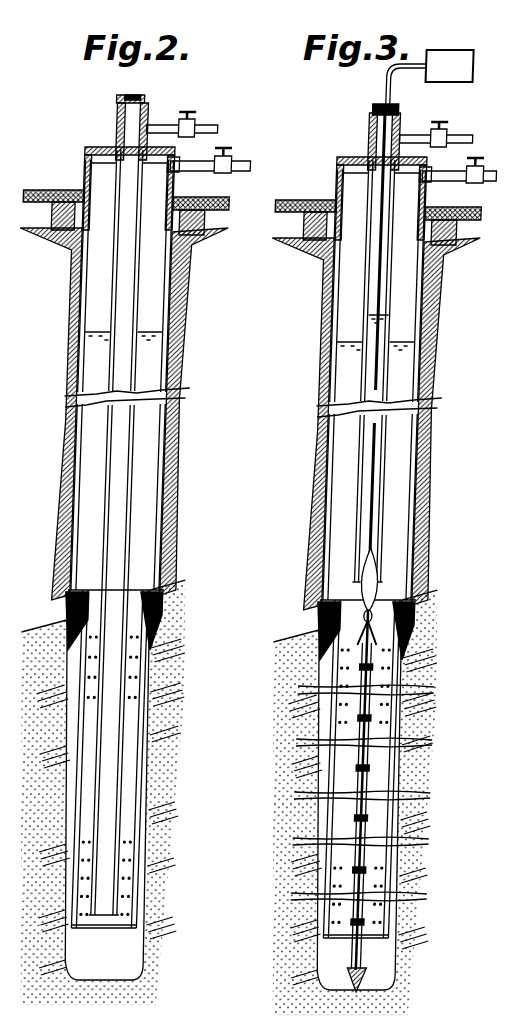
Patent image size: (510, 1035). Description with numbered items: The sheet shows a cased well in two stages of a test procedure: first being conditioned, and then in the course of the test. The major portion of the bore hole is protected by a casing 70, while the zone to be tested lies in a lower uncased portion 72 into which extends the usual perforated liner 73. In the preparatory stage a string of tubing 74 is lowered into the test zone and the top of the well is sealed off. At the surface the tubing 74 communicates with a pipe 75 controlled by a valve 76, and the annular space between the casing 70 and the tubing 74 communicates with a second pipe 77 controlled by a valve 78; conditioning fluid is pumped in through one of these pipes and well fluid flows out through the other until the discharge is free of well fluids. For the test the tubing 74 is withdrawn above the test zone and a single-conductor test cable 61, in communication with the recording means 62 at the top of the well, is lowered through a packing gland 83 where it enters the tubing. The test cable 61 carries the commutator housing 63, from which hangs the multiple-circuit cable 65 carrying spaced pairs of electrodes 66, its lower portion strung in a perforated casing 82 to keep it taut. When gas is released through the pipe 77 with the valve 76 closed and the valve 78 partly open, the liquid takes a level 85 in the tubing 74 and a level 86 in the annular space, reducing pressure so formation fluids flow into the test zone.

In FIG. 3, the single-conductor test cable 61 is at (334, 330).
In FIG. 3, the recording means 62 is at (450, 54).
In FIG. 3, the commutator housing 63 is at (412, 580).
In FIG. 3, the multiple-circuit cable 65 is at (320, 609).
In FIG. 3, the electrodes 66 is at (416, 789).
In FIG. 2, the casing 70 is at (179, 447).
In FIG. 3, the casing 70 is at (350, 385).
In FIG. 2, the lower uncased portion 72 is at (102, 712).
In FIG. 3, the lower uncased portion 72 is at (320, 769).
In FIG. 2, the perforated liner 73 is at (163, 688).
In FIG. 3, the perforated liner 73 is at (316, 787).
In FIG. 2, the tubing 74 is at (149, 295).
In FIG. 3, the tubing 74 is at (414, 371).
In FIG. 2, the pipe 75 is at (170, 125).
In FIG. 3, the pipe 75 is at (436, 121).
In FIG. 2, the valve 76 is at (199, 120).
In FIG. 3, the valve 76 is at (460, 125).
In FIG. 2, the second pipe 77 is at (206, 171).
In FIG. 3, the second pipe 77 is at (457, 185).
In FIG. 2, the valve 78 is at (238, 158).
In FIG. 3, the valve 78 is at (485, 182).
In FIG. 3, the perforated casing 82 is at (310, 801).
In FIG. 3, the packing gland 83 is at (374, 84).
In FIG. 3, the level 85 is at (420, 299).
In FIG. 3, the level 86 is at (401, 334).